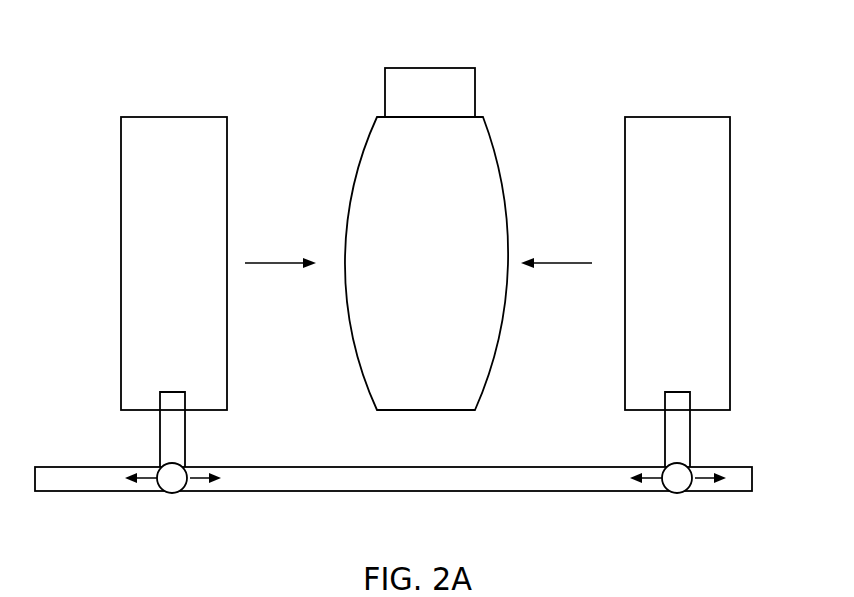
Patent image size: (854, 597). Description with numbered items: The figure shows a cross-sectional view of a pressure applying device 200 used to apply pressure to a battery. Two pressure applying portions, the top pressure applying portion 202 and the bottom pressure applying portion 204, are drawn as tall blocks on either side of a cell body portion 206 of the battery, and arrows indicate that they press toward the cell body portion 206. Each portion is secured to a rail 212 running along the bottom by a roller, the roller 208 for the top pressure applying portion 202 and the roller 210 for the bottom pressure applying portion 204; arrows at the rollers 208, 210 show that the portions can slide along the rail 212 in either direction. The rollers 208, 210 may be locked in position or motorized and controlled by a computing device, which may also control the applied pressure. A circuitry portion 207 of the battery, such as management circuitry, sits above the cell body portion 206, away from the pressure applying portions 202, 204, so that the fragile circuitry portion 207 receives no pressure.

The pressure applying device 200 is at (708, 48).
The top pressure applying portion 202 is at (174, 263).
The bottom pressure applying portion 204 is at (677, 263).
The cell body portion 206 is at (426, 263).
The circuitry portion 207 is at (430, 92).
The roller 208 is at (172, 493).
The roller 210 is at (677, 493).
The rail 212 is at (392, 491).